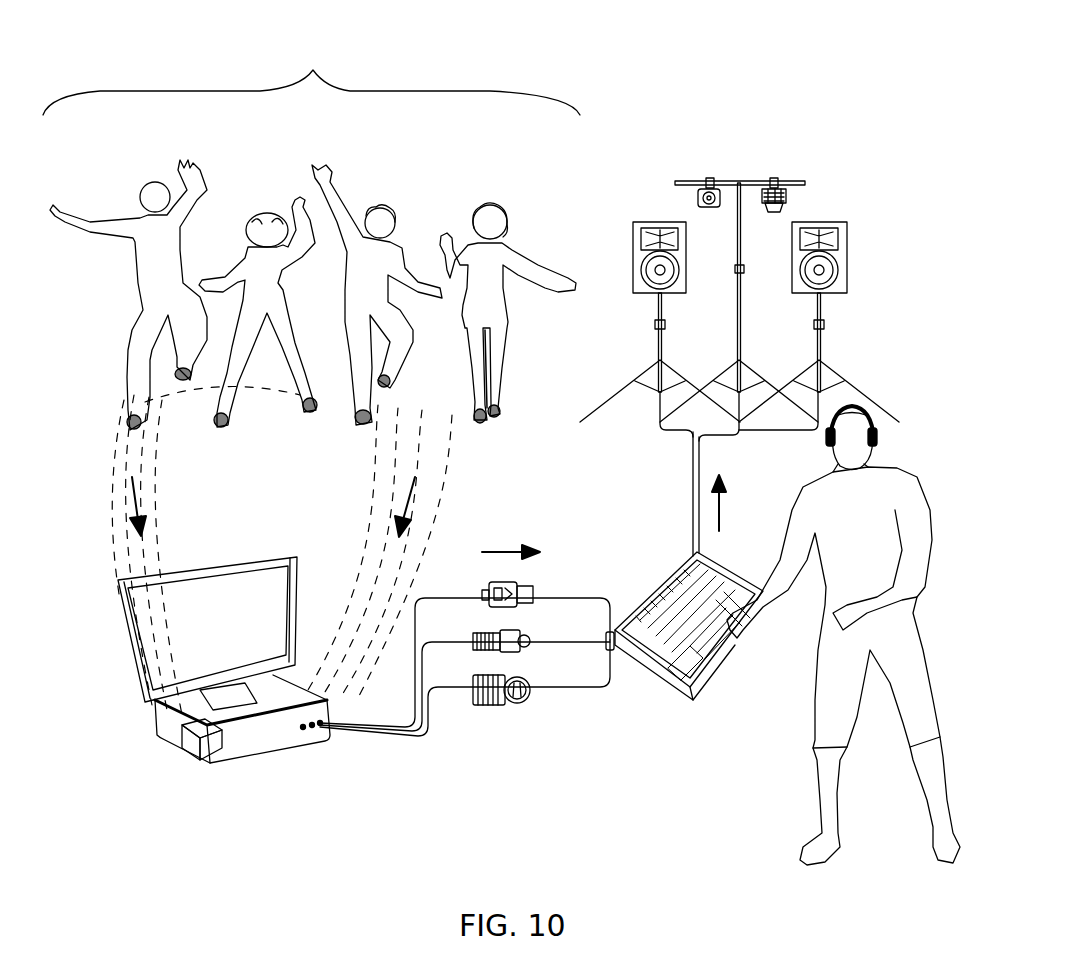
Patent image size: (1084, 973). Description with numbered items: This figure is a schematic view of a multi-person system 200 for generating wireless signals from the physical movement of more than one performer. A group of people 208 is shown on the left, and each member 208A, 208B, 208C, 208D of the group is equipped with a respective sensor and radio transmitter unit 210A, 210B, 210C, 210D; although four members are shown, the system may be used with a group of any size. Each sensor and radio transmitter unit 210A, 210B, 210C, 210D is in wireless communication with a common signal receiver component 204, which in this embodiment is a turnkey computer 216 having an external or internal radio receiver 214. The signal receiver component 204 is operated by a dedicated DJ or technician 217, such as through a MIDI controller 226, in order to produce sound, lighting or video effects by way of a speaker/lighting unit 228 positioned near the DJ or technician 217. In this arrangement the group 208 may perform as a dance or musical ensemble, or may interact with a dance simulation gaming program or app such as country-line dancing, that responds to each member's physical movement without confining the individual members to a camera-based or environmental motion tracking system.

The multi-person system 200 is at (645, 105).
The signal receiver component 204 is at (162, 755).
The group of people 208 is at (313, 70).
The member of the group 208A is at (147, 195).
The member of the group 208B is at (257, 213).
The member of the group 208C is at (382, 210).
The member of the group 208D is at (495, 206).
The sensor and radio transmitter unit 210A is at (175, 370).
The sensor and radio transmitter unit 210B is at (230, 422).
The sensor and radio transmitter unit 210C is at (375, 412).
The sensor and radio transmitter unit 210D is at (482, 422).
The radio receiver 214 is at (207, 763).
The turnkey computer 216 is at (297, 740).
The DJ or technician 217 is at (818, 793).
The MIDI controller 226 is at (693, 700).
The speaker/lighting unit 228 is at (817, 205).